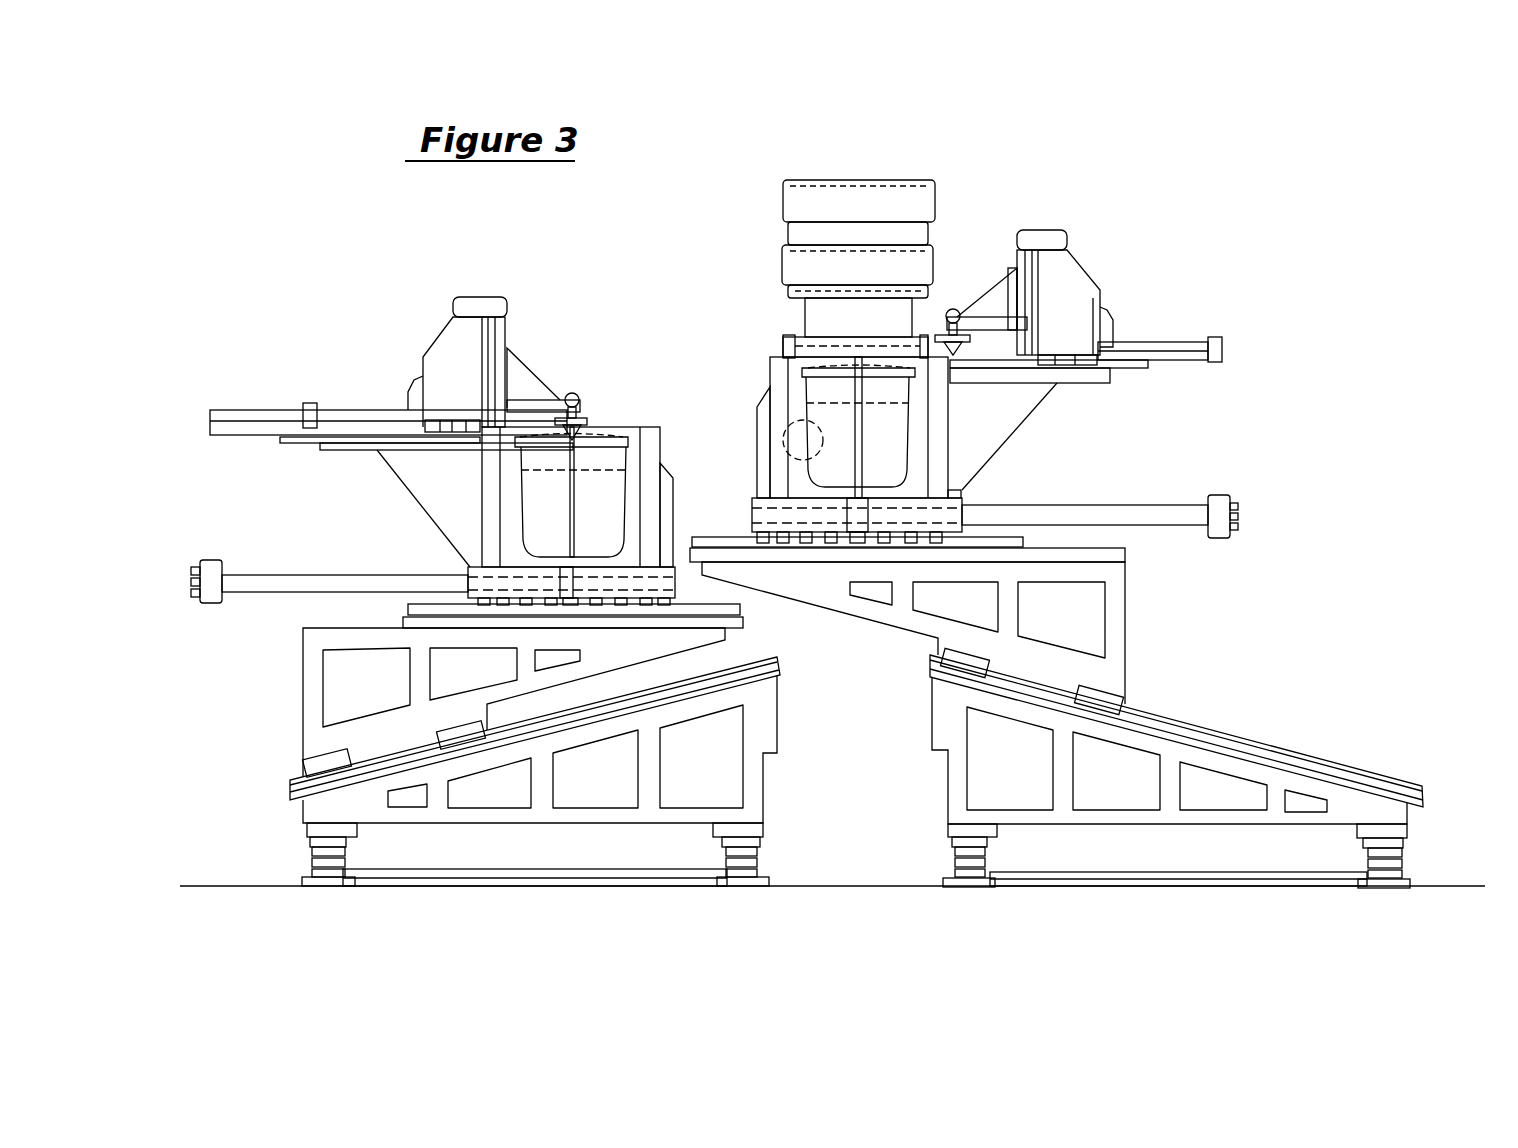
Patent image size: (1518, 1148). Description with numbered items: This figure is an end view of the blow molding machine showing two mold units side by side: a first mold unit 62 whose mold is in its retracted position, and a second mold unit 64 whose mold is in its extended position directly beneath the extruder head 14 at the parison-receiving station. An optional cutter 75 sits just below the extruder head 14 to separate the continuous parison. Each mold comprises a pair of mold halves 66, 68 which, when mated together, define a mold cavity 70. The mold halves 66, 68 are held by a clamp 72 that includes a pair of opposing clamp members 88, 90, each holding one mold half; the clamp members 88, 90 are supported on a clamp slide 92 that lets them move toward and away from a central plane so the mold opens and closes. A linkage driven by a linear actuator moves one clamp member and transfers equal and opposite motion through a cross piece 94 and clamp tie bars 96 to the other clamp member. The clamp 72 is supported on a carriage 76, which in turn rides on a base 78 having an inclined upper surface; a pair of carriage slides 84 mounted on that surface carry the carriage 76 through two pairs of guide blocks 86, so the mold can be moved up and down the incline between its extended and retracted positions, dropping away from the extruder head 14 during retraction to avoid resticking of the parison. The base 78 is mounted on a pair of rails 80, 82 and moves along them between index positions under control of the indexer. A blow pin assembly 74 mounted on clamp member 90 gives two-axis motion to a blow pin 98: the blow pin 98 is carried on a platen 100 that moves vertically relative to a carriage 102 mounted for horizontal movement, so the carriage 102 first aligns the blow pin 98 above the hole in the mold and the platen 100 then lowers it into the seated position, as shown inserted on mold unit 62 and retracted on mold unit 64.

The extruder head 14 is at (782, 200).
The first mold unit 62 is at (270, 696).
The second mold unit 64 is at (1235, 634).
The mold half 66 is at (797, 383).
The mold half 68 is at (920, 403).
The mold cavity 70 is at (780, 435).
The clamp 72 is at (1002, 489).
The blow pin assembly 74 is at (1090, 260).
The cutter 75 is at (783, 342).
The carriage 76 is at (1125, 610).
The base 78 is at (947, 783).
The rail 80 is at (938, 862).
The rail 82 is at (1402, 862).
The carriage slide 84 is at (1252, 740).
The guide block 86 is at (1107, 700).
The clamp member 88 is at (778, 473).
The clamp member 90 is at (945, 450).
The clamp slide 92 is at (1025, 545).
The cross piece 94 is at (1218, 502).
The clamp tie bars 96 is at (1183, 517).
The blow pin 98 is at (947, 311).
The platen 100 is at (1012, 270).
The carriage 102 is at (1093, 295).